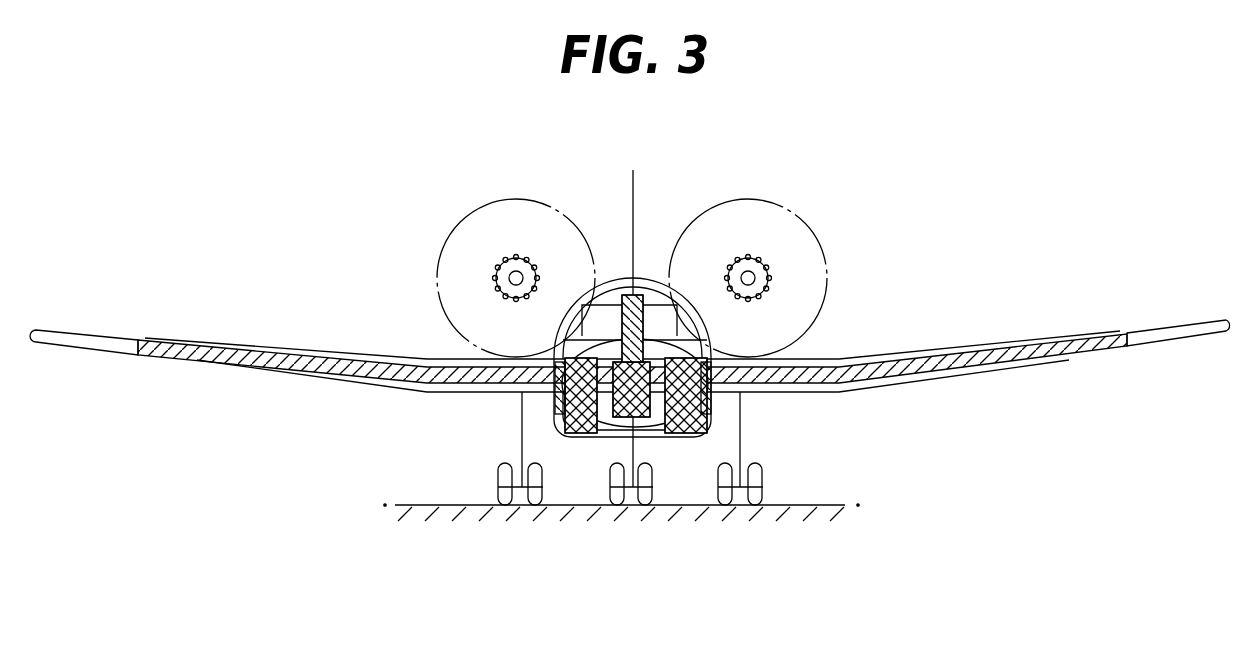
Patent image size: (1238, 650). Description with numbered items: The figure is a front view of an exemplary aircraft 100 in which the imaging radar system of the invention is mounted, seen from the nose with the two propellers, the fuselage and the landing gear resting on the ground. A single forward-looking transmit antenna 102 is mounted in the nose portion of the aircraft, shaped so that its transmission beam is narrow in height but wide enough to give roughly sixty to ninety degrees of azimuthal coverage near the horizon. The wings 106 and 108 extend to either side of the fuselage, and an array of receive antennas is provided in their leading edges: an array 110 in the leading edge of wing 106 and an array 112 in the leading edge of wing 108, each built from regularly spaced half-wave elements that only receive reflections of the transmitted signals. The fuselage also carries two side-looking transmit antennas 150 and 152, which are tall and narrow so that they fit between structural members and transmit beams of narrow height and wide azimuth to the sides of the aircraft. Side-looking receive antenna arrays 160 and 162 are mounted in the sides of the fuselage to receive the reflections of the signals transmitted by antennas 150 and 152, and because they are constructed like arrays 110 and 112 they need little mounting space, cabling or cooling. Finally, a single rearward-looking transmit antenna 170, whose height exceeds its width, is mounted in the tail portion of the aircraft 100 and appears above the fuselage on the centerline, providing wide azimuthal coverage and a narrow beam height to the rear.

The aircraft 100 is at (843, 423).
The transmit antenna 102 is at (658, 420).
The wing 106 is at (82, 331).
The wing 108 is at (1168, 327).
The array 110 is at (254, 347).
The array 112 is at (957, 355).
The side-looking transmit antenna 150 is at (706, 432).
The side-looking transmit antenna 152 is at (562, 434).
The side-looking receive antenna array 160 is at (704, 404).
The side-looking receive antenna array 162 is at (556, 400).
The rearward looking transmit antenna 170 is at (640, 294).